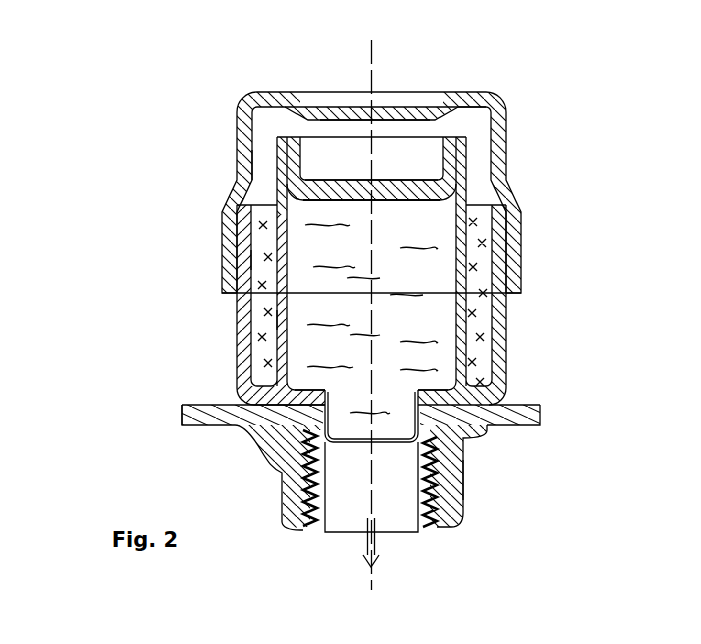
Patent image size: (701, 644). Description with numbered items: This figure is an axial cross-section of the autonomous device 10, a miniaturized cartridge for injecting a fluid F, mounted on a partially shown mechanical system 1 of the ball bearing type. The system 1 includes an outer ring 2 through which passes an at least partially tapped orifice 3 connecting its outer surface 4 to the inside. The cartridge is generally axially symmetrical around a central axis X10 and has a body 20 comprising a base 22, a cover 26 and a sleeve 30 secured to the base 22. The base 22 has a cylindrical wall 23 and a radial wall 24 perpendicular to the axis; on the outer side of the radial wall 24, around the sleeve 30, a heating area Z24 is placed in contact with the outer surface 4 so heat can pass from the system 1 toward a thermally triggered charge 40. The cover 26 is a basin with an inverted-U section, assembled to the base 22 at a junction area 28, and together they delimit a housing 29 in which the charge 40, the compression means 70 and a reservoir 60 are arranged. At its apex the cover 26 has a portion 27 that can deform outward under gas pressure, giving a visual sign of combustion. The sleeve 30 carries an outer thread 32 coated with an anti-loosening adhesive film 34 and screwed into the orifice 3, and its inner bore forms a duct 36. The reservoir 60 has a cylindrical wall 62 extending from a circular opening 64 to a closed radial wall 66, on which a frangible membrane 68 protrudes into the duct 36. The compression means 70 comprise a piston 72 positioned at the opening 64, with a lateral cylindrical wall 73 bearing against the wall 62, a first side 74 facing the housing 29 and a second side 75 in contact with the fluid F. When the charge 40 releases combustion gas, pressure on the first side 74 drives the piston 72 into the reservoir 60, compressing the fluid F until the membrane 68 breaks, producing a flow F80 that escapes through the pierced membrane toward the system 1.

The mechanical system 1 is at (128, 380).
The outer ring 2 is at (183, 412).
The orifice 3 is at (336, 484).
The outer surface 4 is at (195, 396).
The autonomous device 10 is at (202, 76).
The body 20 is at (494, 308).
The base 22 is at (586, 320).
The cylindrical wall 23 is at (494, 337).
The radial wall 24 is at (508, 402).
The cover 26 is at (255, 98).
The deformable portion 27 is at (319, 106).
The junction area 28 is at (530, 255).
The housing 29 is at (262, 171).
The sleeve 30 is at (422, 532).
The outer thread 32 is at (457, 512).
The anti-loosening adhesive film 34 is at (443, 470).
The duct 36 is at (393, 518).
The thermally triggered charge 40 is at (320, 240).
The reservoir 60 is at (277, 323).
The cylindrical wall 62 is at (277, 275).
The circular opening 64 is at (470, 122).
The radial wall 66 is at (293, 495).
The membrane 68 is at (478, 487).
The compression means 70 is at (447, 117).
The piston 72 is at (398, 192).
The lateral cylindrical wall 73 is at (474, 168).
The first side 74 is at (350, 168).
The second side 75 is at (387, 210).
The fluid F is at (247, 226).
The flow F80 is at (349, 544).
The central axis X10 is at (371, 331).
The heating area Z24 is at (263, 440).